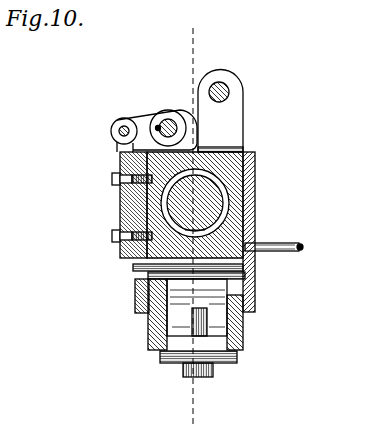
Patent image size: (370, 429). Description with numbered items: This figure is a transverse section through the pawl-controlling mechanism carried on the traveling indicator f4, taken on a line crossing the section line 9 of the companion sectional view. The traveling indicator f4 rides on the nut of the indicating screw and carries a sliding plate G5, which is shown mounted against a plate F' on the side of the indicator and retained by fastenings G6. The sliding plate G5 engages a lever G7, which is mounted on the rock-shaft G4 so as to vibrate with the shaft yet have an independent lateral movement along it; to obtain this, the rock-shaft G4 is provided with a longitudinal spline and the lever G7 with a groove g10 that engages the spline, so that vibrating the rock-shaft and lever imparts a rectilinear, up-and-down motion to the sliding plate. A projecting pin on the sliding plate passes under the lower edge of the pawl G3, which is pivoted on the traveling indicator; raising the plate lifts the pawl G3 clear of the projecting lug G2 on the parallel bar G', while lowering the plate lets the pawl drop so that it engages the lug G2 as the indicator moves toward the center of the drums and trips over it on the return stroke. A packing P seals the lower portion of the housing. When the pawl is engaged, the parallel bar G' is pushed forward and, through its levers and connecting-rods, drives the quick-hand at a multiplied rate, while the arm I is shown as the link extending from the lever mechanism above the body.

The section line 9 is at (225, 42).
The arm I is at (229, 90).
The traveling indicator f4 is at (255, 152).
The plate F' is at (114, 205).
The sliding plate G5 is at (120, 224).
The lever G7 is at (137, 119).
The rock-shaft G4 is at (167, 125).
The groove g10 is at (158, 127).
The packing P is at (189, 271).
The pawl G3 is at (252, 258).
The block G6 is at (137, 297).
The parallel bar G' is at (169, 328).
The projecting lug G2 is at (236, 300).